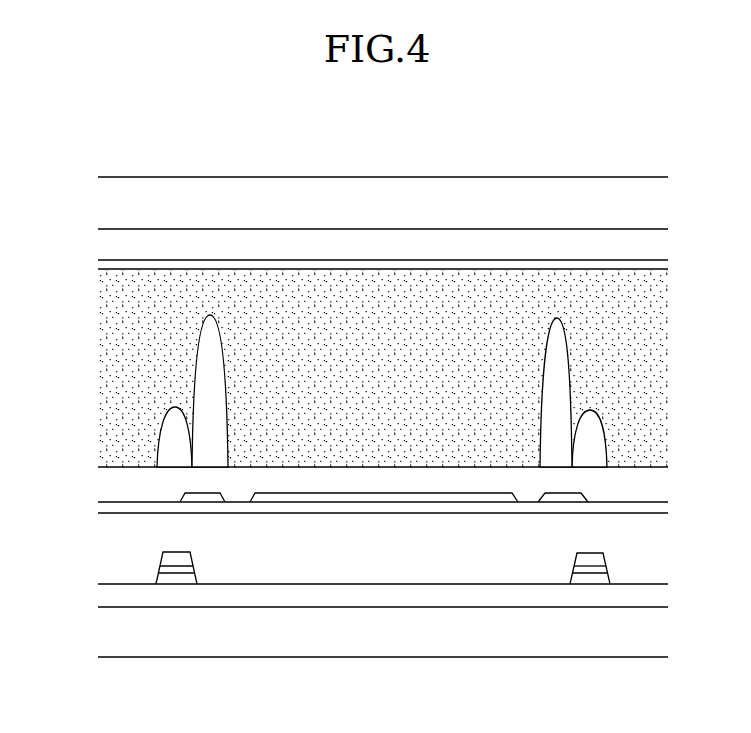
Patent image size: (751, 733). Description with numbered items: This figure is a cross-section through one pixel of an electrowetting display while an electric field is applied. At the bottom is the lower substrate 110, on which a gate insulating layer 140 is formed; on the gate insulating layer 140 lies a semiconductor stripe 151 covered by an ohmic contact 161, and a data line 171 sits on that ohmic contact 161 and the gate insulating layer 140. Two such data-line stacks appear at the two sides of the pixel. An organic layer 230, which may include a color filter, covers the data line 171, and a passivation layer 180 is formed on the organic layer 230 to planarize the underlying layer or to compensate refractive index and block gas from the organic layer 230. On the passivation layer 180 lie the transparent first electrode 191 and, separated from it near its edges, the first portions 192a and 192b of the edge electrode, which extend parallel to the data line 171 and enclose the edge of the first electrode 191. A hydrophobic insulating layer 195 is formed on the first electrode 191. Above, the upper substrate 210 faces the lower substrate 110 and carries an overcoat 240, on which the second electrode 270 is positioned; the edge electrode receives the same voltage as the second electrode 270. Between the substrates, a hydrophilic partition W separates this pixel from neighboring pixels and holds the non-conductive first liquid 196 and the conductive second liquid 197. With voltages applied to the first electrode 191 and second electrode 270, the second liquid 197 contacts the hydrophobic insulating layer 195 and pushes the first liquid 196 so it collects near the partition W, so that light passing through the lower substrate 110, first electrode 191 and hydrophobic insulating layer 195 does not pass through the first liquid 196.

The upper substrate 210 is at (644, 201).
The overcoat 240 is at (646, 247).
The second electrode 270 is at (646, 262).
The second liquid 197 is at (420, 307).
The first liquid 196 is at (205, 357).
The partition W is at (590, 430).
The hydrophobic insulating layer 195 is at (648, 487).
The first portion of edge electrode 192b is at (207, 500).
The first electrode 191 is at (400, 500).
The first portion of edge electrode 192a is at (560, 499).
The passivation layer 180 is at (650, 514).
The organic layer 230 is at (650, 548).
The gate insulating layer 140 is at (650, 600).
The lower substrate 110 is at (650, 635).
The data line 171 is at (173, 560).
The ohmic contact 161 is at (177, 568).
The semiconductor stripe 151 is at (186, 578).